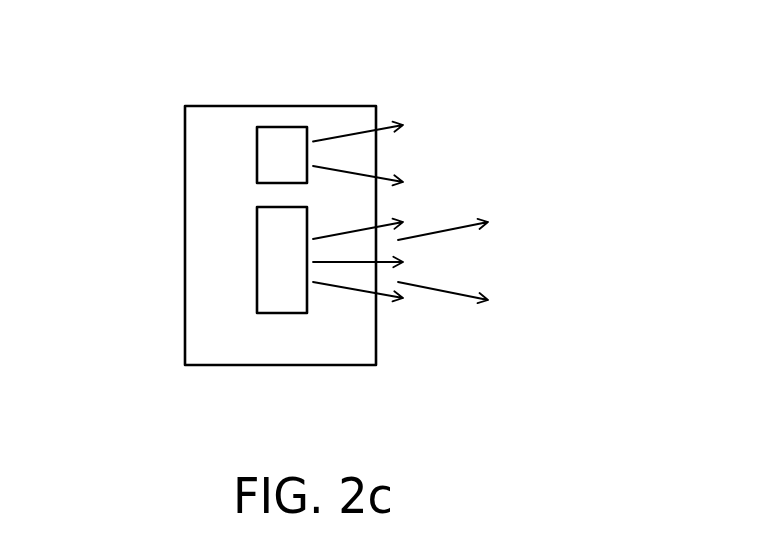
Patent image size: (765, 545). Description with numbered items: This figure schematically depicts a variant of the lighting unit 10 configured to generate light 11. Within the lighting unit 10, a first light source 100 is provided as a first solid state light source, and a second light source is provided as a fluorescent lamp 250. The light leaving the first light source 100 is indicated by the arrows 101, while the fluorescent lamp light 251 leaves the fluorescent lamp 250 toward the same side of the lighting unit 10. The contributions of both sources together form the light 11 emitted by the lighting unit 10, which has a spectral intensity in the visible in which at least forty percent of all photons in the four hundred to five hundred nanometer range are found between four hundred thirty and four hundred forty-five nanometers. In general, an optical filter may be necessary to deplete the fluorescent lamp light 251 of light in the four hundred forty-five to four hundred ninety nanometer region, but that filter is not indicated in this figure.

The lighting unit 10 is at (156, 215).
The first light source 100 is at (282, 106).
The light beams 101 is at (388, 123).
The fluorescent lamp 250 is at (230, 281).
The fluorescent lamp light 251 is at (338, 289).
The light 11 is at (446, 328).